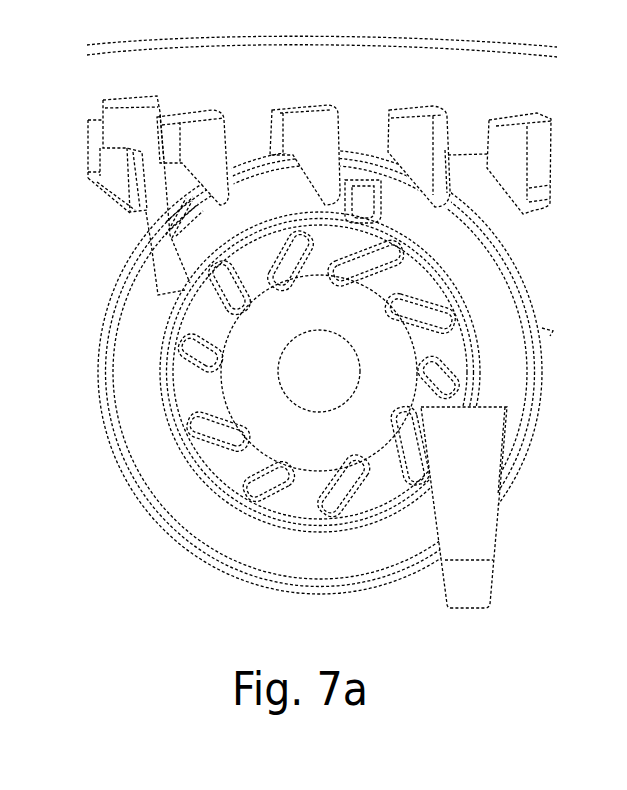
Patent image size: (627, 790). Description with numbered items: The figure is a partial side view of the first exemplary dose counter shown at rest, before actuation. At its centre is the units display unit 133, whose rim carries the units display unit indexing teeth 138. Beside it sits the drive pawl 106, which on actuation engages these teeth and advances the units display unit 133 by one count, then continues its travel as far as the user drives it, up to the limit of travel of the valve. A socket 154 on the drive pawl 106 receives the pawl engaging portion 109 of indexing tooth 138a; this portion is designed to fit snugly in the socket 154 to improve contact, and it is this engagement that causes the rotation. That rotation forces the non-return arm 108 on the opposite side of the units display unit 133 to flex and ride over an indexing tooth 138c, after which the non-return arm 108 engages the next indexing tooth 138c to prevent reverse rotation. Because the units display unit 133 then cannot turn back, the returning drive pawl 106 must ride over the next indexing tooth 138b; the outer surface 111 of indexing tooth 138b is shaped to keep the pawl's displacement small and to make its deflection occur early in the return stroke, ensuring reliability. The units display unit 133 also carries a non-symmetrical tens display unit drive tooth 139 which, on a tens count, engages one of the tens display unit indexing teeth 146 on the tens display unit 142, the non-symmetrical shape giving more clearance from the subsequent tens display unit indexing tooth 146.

The drive pawl 106 is at (153, 217).
The non-return arm 108 is at (483, 433).
The pawl engaging portion 109 is at (250, 487).
The outer surface 111 is at (250, 487).
The units display unit 133 is at (303, 455).
The units display unit indexing teeth 138 is at (200, 445).
The indexing tooth 138a is at (195, 360).
The indexing tooth 138b is at (232, 283).
The indexing tooth 138c is at (405, 470).
The tens display unit drive tooth 139 is at (364, 222).
The tens display unit 142 is at (463, 122).
The tens display unit indexing teeth 146 is at (318, 135).
The socket 154 is at (190, 288).